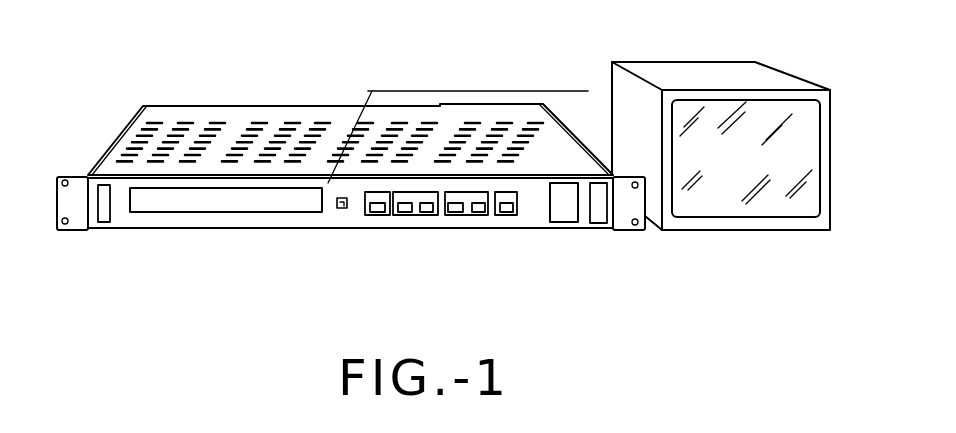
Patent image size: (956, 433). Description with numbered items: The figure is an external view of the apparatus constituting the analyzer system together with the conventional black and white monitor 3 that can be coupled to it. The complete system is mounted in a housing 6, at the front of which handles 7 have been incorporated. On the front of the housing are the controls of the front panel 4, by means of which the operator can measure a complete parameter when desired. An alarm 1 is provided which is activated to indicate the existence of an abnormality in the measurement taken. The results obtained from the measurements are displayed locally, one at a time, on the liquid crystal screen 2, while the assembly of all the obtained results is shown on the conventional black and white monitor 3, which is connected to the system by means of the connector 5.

The alarm 1 is at (343, 209).
The liquid crystal screen 2 is at (213, 211).
The black and white monitor 3 is at (743, 242).
The front panel controls 4 is at (503, 214).
The connector 5 is at (561, 212).
The housing 6 is at (310, 98).
The handles 7 is at (88, 230).